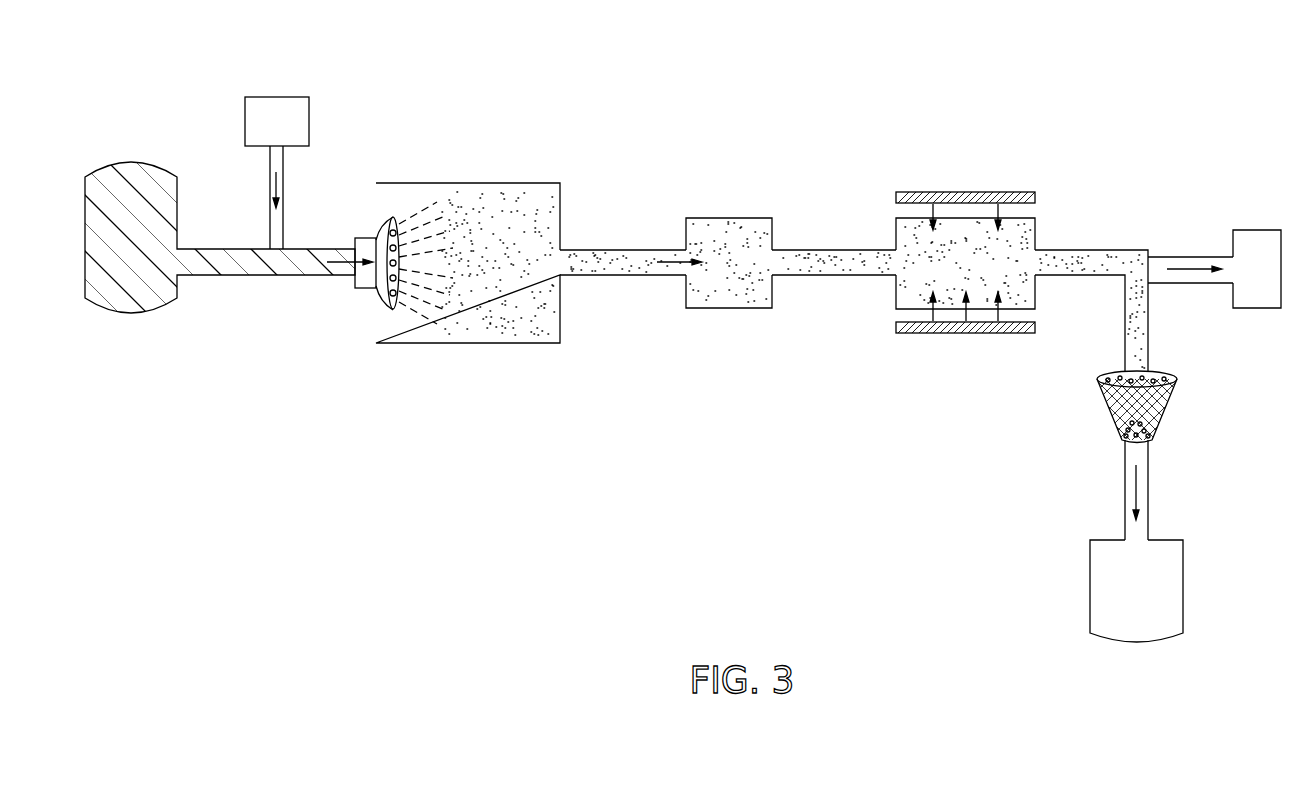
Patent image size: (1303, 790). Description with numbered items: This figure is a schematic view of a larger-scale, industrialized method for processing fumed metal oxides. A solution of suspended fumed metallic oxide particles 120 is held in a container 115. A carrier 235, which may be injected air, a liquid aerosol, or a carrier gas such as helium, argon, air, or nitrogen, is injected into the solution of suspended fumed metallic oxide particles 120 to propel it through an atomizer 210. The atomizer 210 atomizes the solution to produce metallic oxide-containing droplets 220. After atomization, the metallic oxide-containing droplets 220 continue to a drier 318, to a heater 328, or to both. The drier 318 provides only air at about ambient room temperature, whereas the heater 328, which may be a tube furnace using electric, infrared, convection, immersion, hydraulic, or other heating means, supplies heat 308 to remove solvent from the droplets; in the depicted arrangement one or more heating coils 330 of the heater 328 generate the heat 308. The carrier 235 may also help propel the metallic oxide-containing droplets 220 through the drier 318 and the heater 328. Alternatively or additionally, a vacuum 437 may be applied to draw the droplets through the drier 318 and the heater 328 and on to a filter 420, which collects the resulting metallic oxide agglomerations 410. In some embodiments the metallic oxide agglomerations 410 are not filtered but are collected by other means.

The container 115 is at (255, 253).
The solution of suspended fumed metallic oxide particles 120 is at (150, 298).
The carrier 235 is at (275, 96).
The atomizer 210 is at (363, 292).
The metallic oxide-containing droplets 220 is at (428, 206).
The drier 318 is at (727, 217).
The heater 328 is at (963, 234).
The heating coils 330 is at (994, 177).
The heat 308 is at (967, 315).
The vacuum 437 is at (1255, 230).
The filter 420 is at (1112, 416).
The metallic oxide agglomerations 410 is at (1120, 437).